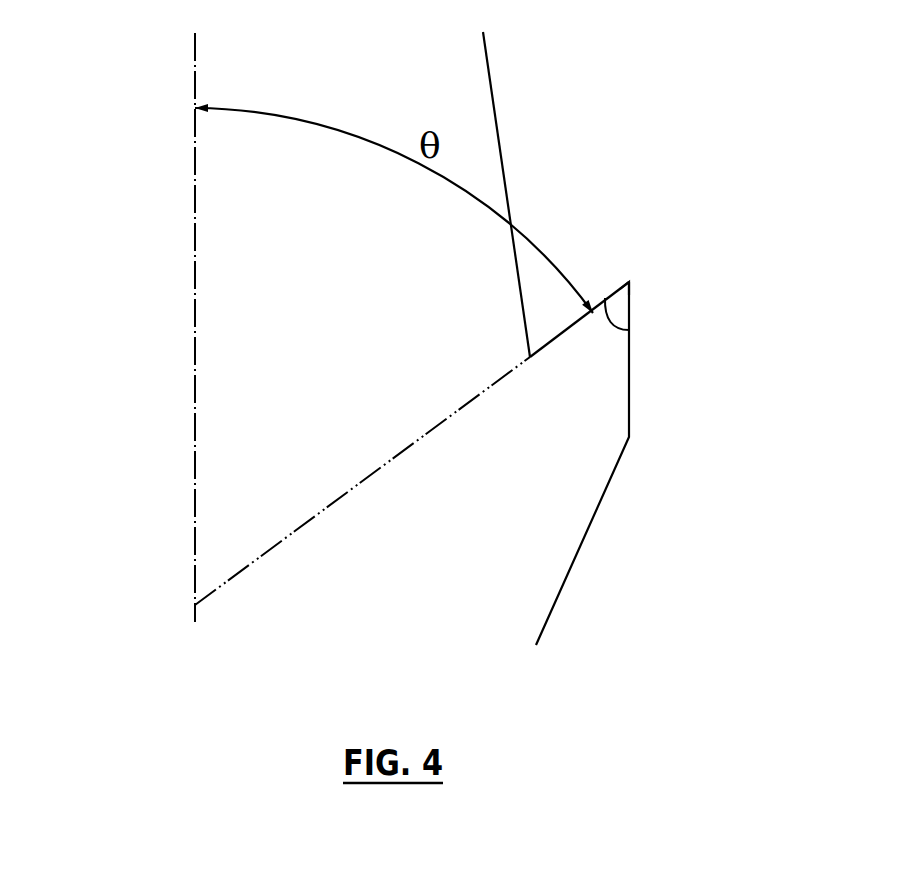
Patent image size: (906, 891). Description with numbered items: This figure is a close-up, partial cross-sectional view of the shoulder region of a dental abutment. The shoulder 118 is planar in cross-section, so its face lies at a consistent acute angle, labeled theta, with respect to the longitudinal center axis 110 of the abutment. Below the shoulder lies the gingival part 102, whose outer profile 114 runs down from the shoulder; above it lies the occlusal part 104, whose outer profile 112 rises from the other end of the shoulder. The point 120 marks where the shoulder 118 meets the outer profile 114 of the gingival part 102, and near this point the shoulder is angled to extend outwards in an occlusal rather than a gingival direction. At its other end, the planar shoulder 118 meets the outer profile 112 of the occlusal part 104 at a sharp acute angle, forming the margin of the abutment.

The gingival part 102 is at (455, 510).
The occlusal part 104 is at (362, 95).
The longitudinal center axis 110 is at (195, 342).
The outer profile of the occlusal part 112 is at (500, 142).
The outer profile of the gingival part 114 is at (629, 373).
The shoulder 118 is at (629, 330).
The point 120 is at (633, 276).